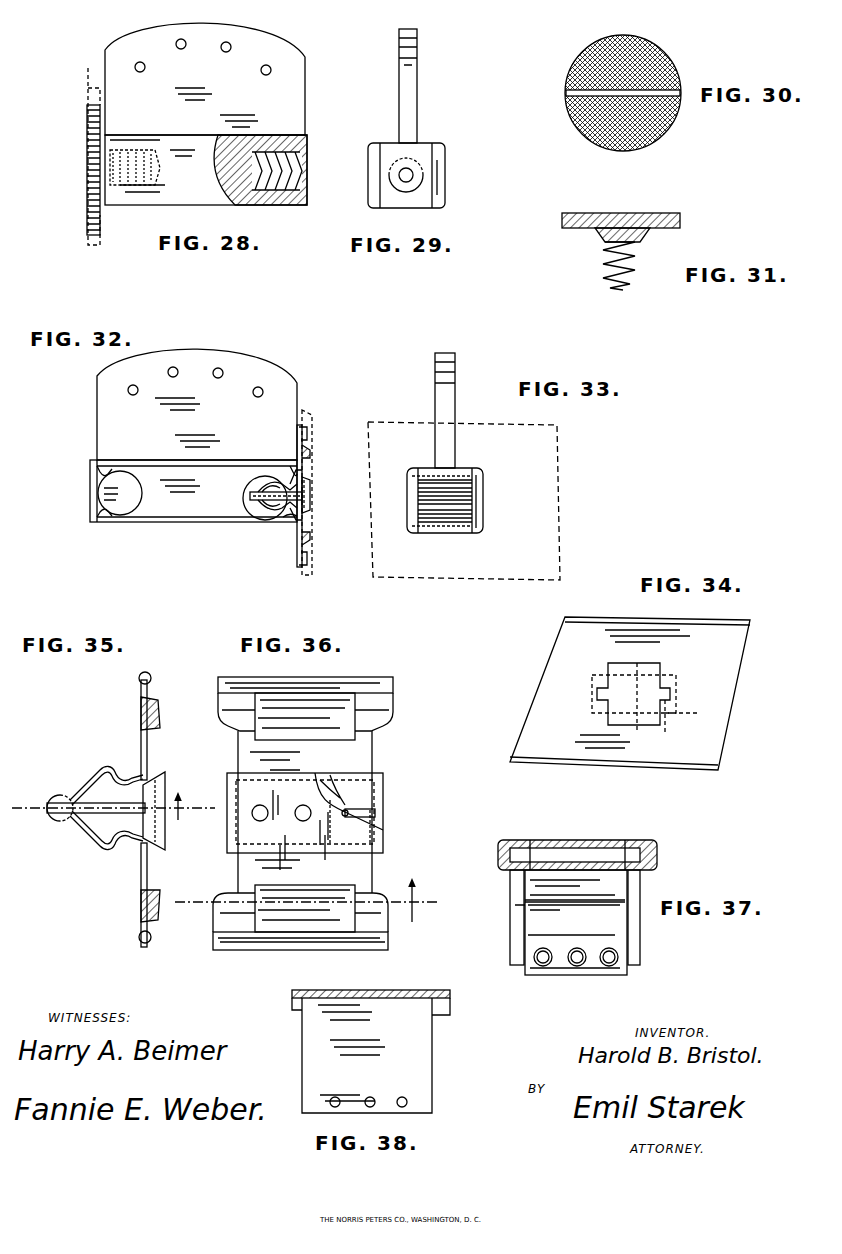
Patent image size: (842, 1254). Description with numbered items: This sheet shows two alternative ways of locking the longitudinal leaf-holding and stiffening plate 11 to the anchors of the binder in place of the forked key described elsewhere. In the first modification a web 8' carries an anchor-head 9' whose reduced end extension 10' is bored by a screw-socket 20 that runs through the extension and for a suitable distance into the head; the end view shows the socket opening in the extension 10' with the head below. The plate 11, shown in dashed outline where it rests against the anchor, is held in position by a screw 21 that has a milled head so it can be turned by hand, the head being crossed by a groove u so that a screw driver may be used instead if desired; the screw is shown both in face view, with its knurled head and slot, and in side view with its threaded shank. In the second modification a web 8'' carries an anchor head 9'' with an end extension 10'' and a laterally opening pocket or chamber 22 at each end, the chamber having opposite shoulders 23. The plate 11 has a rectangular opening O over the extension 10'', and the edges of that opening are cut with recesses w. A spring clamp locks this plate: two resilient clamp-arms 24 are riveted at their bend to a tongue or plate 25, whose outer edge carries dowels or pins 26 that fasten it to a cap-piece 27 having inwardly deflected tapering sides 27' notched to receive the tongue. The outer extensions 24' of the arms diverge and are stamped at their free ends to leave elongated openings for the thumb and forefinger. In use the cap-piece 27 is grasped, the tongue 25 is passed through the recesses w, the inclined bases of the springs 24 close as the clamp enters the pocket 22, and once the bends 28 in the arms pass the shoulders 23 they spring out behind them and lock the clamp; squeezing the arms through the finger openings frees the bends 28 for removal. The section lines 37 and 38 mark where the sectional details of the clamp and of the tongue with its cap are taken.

In FIG. 28, the web 8' is at (205, 74).
In FIG. 29, the web 8' is at (427, 86).
In FIG. 28, the anchor-head 9' is at (197, 192).
In FIG. 29, the anchor-head 9' is at (428, 175).
In FIG. 28, the extension 10' is at (192, 135).
In FIG. 29, the extension 10' is at (455, 207).
In FIG. 28, the leaf-holding and stiffening plate 11 is at (86, 144).
In FIG. 32, the leaf-holding and stiffening plate 11 is at (308, 418).
In FIG. 33, the leaf-holding and stiffening plate 11 is at (548, 492).
In FIG. 34, the leaf-holding and stiffening plate 11 is at (550, 682).
In FIG. 28, the screw-socket 20 is at (283, 180).
In FIG. 29, the screw-socket 20 is at (410, 170).
In FIG. 28, the screw 21 is at (90, 205).
In FIG. 30, the screw 21 is at (590, 140).
In FIG. 31, the screw 21 is at (580, 232).
In FIG. 30, the groove u is at (566, 93).
In FIG. 32, the web 8'' is at (201, 398).
In FIG. 33, the web 8'' is at (459, 410).
In FIG. 32, the anchor head 9'' is at (193, 513).
In FIG. 33, the anchor head 9'' is at (468, 497).
In FIG. 32, the extension 10'' is at (199, 493).
In FIG. 33, the extension 10'' is at (485, 455).
In FIG. 32, the pocket, cavity or chamber 22 is at (128, 505).
In FIG. 33, the pocket, cavity or chamber 22 is at (453, 500).
In FIG. 32, the shoulders 23 is at (104, 468).
In FIG. 33, the shoulders 23 is at (417, 486).
In FIG. 32, the clamp-arms 24 is at (272, 519).
In FIG. 35, the clamp-arms 24 is at (99, 826).
In FIG. 36, the clamp-arms 24 is at (379, 790).
In FIG. 37, the clamp-arms 24 is at (614, 933).
In FIG. 32, the outer extensions 24' is at (329, 502).
In FIG. 35, the outer extensions 24' is at (149, 819).
In FIG. 36, the outer extensions 24' is at (334, 824).
In FIG. 32, the tongue or plate 25 is at (258, 493).
In FIG. 34, the tongue or plate 25 is at (634, 710).
In FIG. 35, the tongue or plate 25 is at (78, 804).
In FIG. 36, the tongue or plate 25 is at (376, 815).
In FIG. 37, the tongue or plate 25 is at (515, 952).
In FIG. 38, the tongue or plate 25 is at (425, 1050).
In FIG. 36, the dowels or pins 26 is at (346, 818).
In FIG. 37, the dowels or pins 26 is at (576, 957).
In FIG. 38, the dowels or pins 26 is at (332, 992).
In FIG. 32, the cap-piece 27 is at (328, 499).
In FIG. 34, the cap-piece 27 is at (690, 728).
In FIG. 35, the cap-piece 27 is at (180, 802).
In FIG. 36, the cap-piece 27 is at (284, 812).
In FIG. 37, the cap-piece 27 is at (577, 837).
In FIG. 38, the cap-piece 27 is at (371, 978).
In FIG. 32, the tapering sides 27' is at (332, 492).
In FIG. 35, the tapering sides 27' is at (181, 791).
In FIG. 36, the tapering sides 27' is at (377, 829).
In FIG. 38, the tapering sides 27' is at (395, 1007).
In FIG. 32, the bends 28 is at (292, 520).
In FIG. 35, the bends 28 is at (108, 775).
In FIG. 37, the bends 28 is at (535, 905).
In FIG. 33, the recesses w is at (416, 500).
In FIG. 34, the recesses w is at (597, 694).
In FIG. 34, the rectangular opening O is at (655, 680).
In FIG. 36, the rectangular opening O is at (372, 700).
In FIG. 37, the rectangular opening O is at (512, 855).
In FIG. 36, the section line 37— 37 is at (317, 902).
In FIG. 35, the section line 38— 38 is at (112, 810).